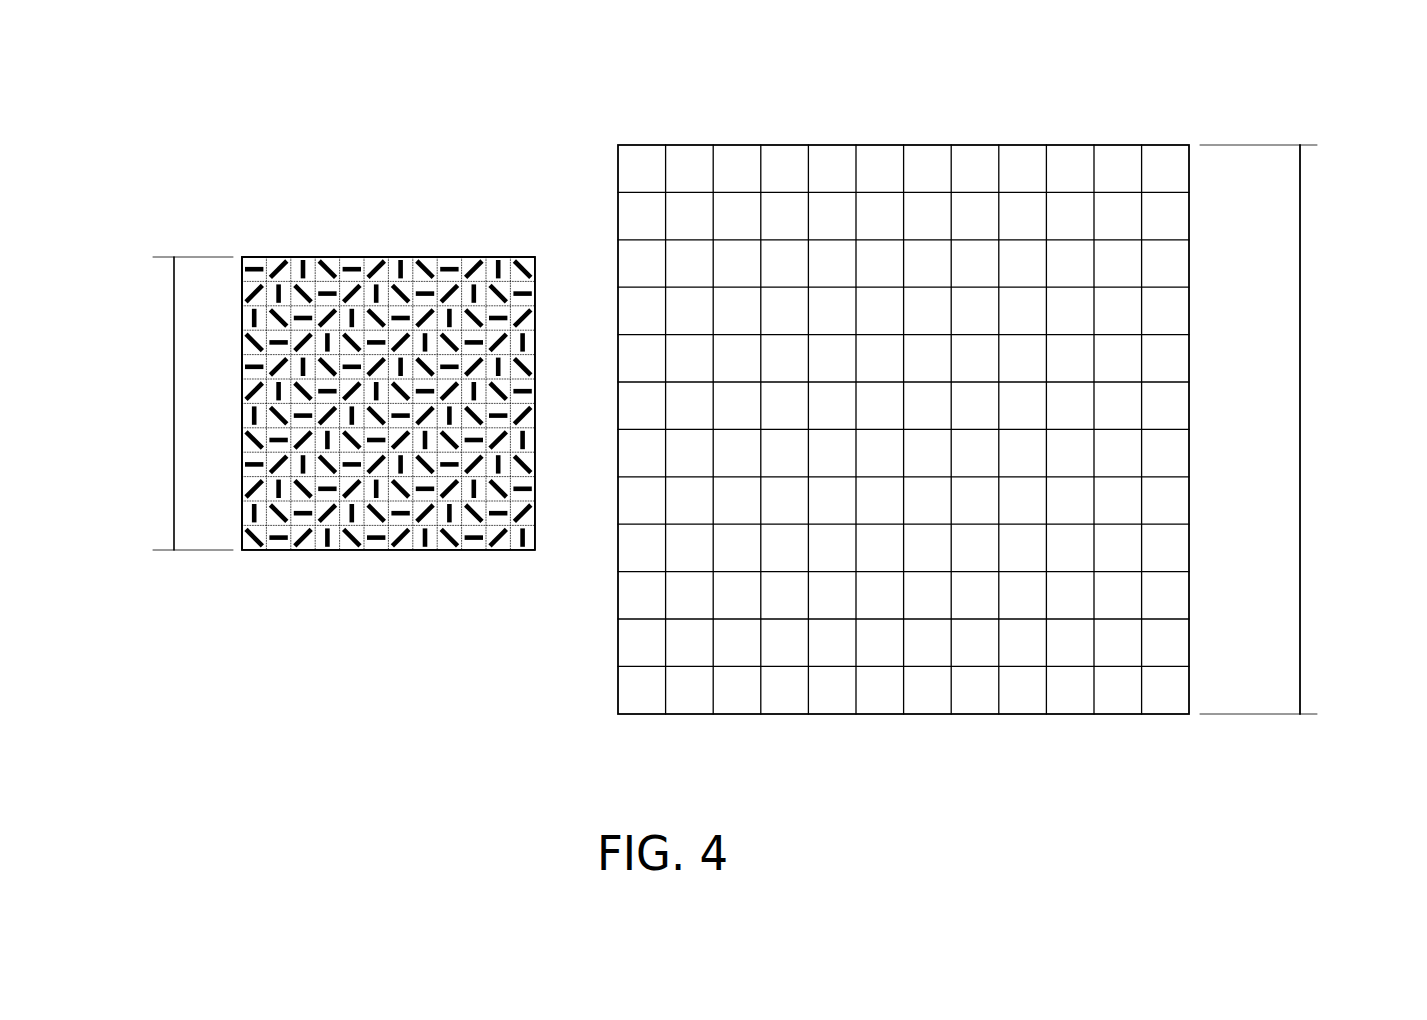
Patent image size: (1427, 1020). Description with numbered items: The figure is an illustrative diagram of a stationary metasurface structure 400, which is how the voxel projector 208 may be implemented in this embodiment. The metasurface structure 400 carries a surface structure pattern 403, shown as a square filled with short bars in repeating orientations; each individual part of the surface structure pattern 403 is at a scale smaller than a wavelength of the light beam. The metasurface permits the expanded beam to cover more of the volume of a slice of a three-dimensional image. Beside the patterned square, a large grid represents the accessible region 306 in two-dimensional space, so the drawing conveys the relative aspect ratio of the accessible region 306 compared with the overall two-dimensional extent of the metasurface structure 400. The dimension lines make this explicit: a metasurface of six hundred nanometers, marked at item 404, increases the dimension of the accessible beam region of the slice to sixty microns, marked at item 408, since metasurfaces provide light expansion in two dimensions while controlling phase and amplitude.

The voxel projector 208 is at (332, 215).
The accessible region 306 is at (865, 145).
The metasurface structure 400 is at (474, 550).
The surface structure pattern 403 is at (252, 480).
The metasurface dimension 404 is at (174, 330).
The accessible beam region dimension 408 is at (1300, 565).